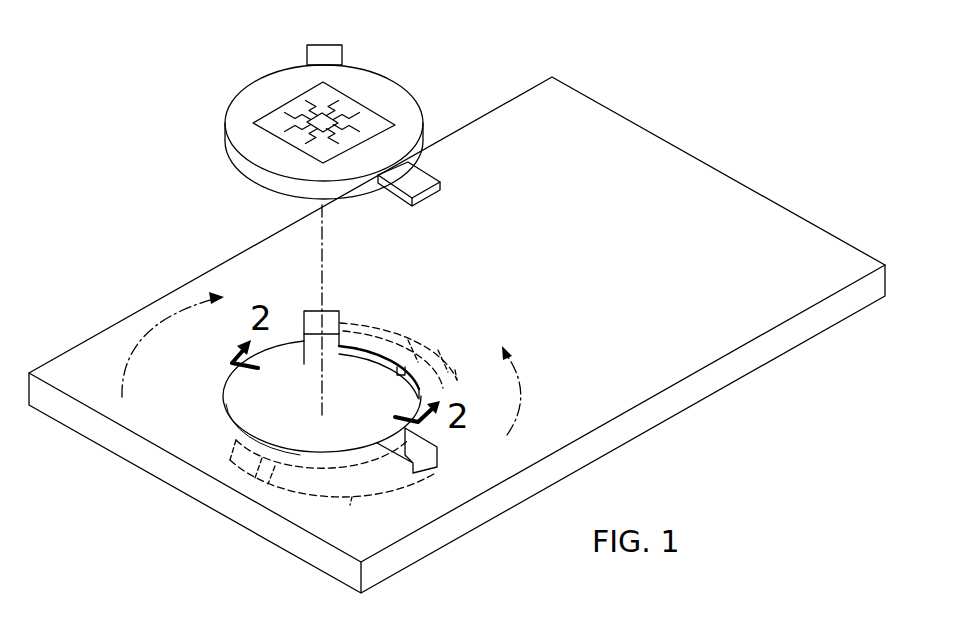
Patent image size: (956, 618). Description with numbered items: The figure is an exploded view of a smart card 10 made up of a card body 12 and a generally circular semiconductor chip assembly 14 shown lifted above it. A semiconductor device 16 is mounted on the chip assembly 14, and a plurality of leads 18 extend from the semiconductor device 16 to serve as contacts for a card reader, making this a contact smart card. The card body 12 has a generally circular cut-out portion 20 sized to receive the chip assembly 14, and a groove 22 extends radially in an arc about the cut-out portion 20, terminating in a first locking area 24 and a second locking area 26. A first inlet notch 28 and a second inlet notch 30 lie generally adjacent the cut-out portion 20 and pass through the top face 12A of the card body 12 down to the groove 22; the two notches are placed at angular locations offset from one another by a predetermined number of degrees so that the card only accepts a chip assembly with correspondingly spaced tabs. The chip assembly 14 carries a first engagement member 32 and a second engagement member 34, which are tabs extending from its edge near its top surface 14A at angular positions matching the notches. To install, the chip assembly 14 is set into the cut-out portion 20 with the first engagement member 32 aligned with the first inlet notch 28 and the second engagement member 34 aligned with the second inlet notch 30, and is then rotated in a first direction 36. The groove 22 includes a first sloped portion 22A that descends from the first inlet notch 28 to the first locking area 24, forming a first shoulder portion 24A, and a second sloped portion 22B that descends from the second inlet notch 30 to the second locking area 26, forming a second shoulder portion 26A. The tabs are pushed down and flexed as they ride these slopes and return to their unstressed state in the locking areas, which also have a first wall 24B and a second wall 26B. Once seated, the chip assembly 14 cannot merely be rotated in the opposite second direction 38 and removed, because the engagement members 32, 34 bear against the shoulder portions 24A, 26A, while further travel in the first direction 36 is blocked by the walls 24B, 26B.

The smart card 10 is at (138, 127).
The card body 12 is at (457, 317).
The top face 12A is at (578, 104).
The semiconductor chip assembly 14 is at (341, 122).
The top surface 14A is at (255, 97).
The semiconductor device 16 is at (320, 117).
The leads 18 is at (350, 102).
The cut-out portion 20 is at (226, 438).
The groove 22 is at (374, 364).
The first sloped portion 22A is at (354, 352).
The second sloped portion 22B is at (356, 502).
The first locking area 24 is at (440, 348).
The first shoulder portion 24A is at (413, 338).
The first wall 24B is at (478, 356).
The second locking area 26 is at (272, 535).
The second shoulder portion 26A is at (306, 442).
The second wall 26B is at (222, 520).
The first inlet notch 28 is at (330, 311).
The second inlet notch 30 is at (440, 456).
The first engagement member 32 is at (323, 46).
The second engagement member 34 is at (430, 196).
The first direction 36 is at (140, 343).
The second direction 38 is at (518, 372).